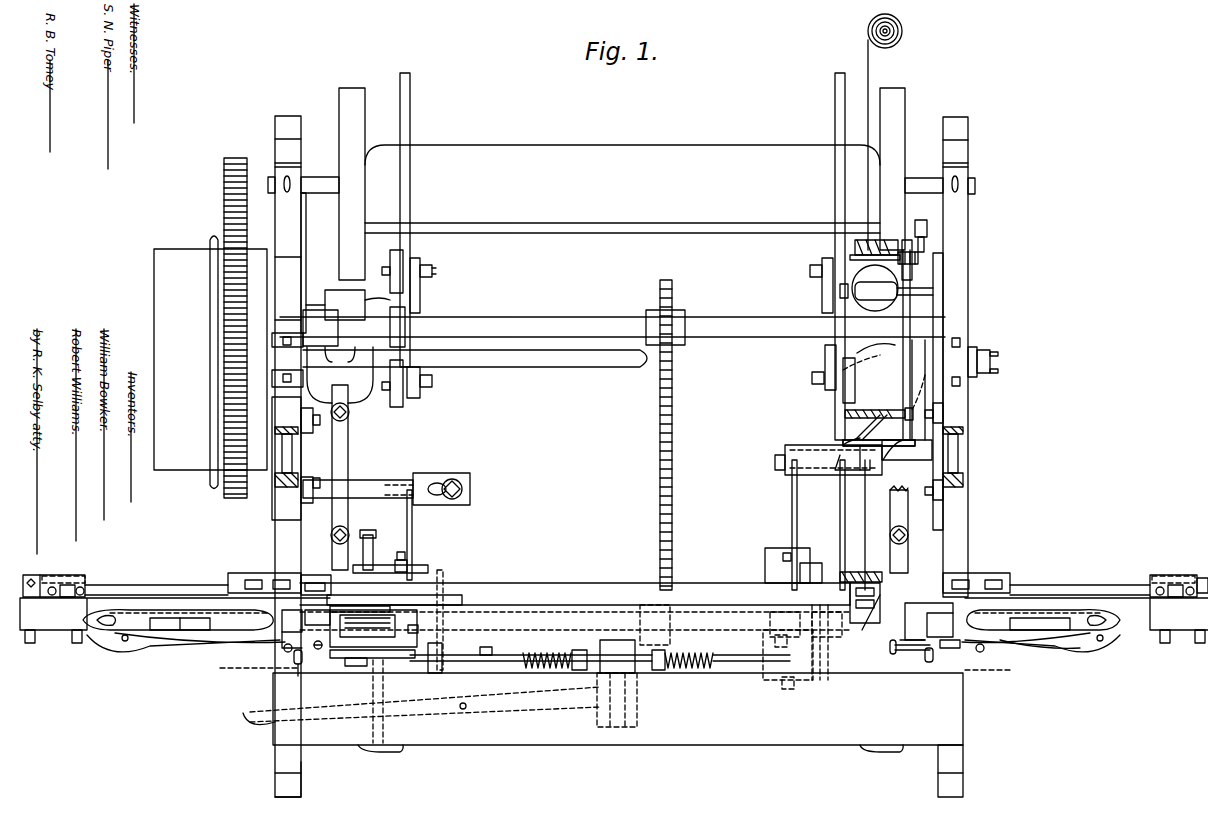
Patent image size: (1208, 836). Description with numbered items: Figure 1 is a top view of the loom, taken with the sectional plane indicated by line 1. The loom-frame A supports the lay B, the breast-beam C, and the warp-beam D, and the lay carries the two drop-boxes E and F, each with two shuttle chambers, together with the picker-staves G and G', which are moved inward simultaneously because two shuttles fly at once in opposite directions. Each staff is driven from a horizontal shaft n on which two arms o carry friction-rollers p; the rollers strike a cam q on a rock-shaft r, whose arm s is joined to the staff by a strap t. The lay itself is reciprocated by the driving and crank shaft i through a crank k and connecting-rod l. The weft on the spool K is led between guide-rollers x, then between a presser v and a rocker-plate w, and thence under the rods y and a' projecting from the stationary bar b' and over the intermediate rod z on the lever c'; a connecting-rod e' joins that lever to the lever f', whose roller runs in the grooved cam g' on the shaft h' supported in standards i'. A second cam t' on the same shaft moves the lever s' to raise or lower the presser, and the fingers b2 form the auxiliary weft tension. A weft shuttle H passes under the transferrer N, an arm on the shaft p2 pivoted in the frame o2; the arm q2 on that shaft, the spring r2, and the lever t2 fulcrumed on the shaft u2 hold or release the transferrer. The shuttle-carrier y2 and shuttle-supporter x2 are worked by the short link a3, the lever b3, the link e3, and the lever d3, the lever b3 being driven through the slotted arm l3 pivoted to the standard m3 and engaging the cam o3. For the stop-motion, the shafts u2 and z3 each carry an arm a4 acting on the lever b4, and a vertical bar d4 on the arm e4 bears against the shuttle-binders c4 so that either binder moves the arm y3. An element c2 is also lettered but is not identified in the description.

The loom-frame A is at (621, 456).
The lay B is at (575, 610).
The breast-beam C is at (618, 735).
The warp-beam D is at (532, 285).
The drop-box E is at (292, 629).
The drop-box F is at (1056, 625).
The picker-staff G is at (125, 576).
The picker-staff G' is at (1109, 576).
The shuttle H is at (175, 625).
The spool K is at (891, 132).
The transferrer N is at (372, 622).
The horizontal shaft n is at (612, 328).
The driving and crank shaft i is at (475, 357).
The arm o is at (621, 328).
The friction-roller p is at (628, 328).
The cam q is at (630, 327).
The rock-shaft r is at (609, 370).
The crank k is at (340, 375).
The connecting-rod l is at (619, 479).
The stationary standard m3 is at (386, 488).
The arm l3 is at (414, 535).
The lever b3 is at (375, 566).
The link e3 is at (420, 568).
The lever d3 is at (442, 572).
The short link a3 is at (365, 586).
The shaft p2 is at (317, 616).
The shuttle-carrier y2 is at (364, 614).
The shuttle-supporter x2 is at (420, 630).
The frame o2 is at (311, 645).
The cam o3 is at (435, 656).
The shaft u2 is at (531, 658).
The arm q2 is at (385, 660).
The spring r2 is at (364, 701).
The lever t2 is at (385, 670).
The arm y3 is at (613, 669).
The lever b4 is at (421, 706).
The arm a4 is at (619, 692).
The shaft z3 is at (721, 660).
The grooved cam g' is at (807, 648).
The horizontal shaft h' is at (686, 604).
The standard i' is at (881, 465).
The cam t' is at (811, 573).
The lever s' is at (853, 491).
The lever f' is at (889, 481).
The fingers b2 is at (861, 567).
The block c2 is at (865, 606).
The strap or connection t is at (619, 571).
The shuttle-binder c4 is at (1005, 640).
The vertical bar d4 is at (950, 653).
The arm e4 is at (910, 646).
The section line 1 is at (612, 669).
The presser v is at (875, 288).
The rocker-plate w is at (886, 291).
The guide-rollers x is at (880, 240).
The arm s is at (907, 237).
The lever c' is at (913, 318).
The connecting-rod e' is at (927, 226).
The rod y is at (879, 429).
The rod z is at (879, 420).
The rod a' is at (853, 451).
The stationary bar b' is at (846, 441).